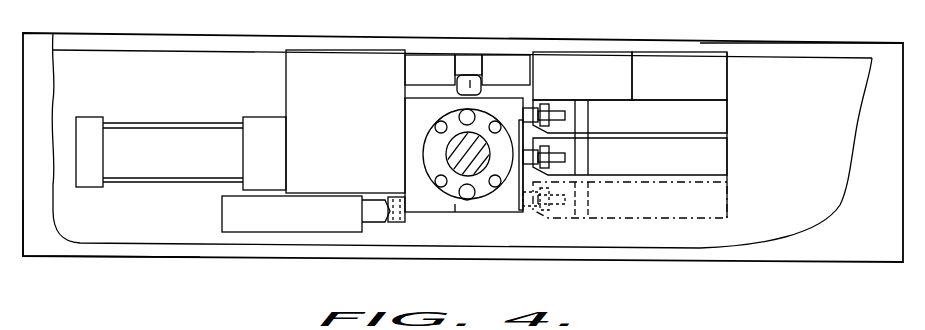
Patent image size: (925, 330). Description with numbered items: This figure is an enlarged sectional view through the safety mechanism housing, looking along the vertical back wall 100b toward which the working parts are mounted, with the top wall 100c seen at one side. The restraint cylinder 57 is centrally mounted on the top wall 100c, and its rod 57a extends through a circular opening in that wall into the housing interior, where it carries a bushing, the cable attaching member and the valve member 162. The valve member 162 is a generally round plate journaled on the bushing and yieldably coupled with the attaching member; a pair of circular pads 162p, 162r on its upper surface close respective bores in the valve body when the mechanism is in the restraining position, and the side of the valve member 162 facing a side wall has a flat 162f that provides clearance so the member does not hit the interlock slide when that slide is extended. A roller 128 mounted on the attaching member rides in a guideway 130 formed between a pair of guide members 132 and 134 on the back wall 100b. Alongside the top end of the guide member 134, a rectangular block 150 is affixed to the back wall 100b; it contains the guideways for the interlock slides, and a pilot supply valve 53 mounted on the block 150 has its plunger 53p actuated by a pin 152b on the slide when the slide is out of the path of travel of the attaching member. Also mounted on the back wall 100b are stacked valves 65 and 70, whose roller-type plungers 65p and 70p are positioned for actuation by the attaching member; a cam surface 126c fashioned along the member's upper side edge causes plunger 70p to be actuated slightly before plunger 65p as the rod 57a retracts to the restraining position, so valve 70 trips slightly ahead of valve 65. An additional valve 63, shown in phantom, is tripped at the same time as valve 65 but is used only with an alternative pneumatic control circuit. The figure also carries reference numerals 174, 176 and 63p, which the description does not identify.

The vertical back wall 100b is at (702, 44).
The top wall 100c is at (60, 244).
The restraint cylinder 57 is at (118, 118).
The rod of restraint cylinder 57a is at (454, 143).
The rectangular block 150 is at (286, 66).
The pilot supply valve 53 is at (225, 210).
The plunger 53p is at (376, 220).
The pin 152b is at (397, 224).
The guide member 134 is at (430, 72).
The guideway 130 is at (466, 58).
The roller 128 is at (470, 80).
The guide member 132 is at (523, 66).
The valve member 162 is at (504, 198).
The flat 162f is at (424, 162).
The circular pad 162r is at (462, 116).
The circular pad 162p is at (468, 200).
The mounting holes 174 is at (438, 148).
The opening 176 is at (455, 212).
The cam surface 126c is at (548, 103).
The valve 70 is at (714, 118).
The roller-type plunger 70p is at (565, 117).
The valve 65 is at (718, 160).
The roller-type plunger 65p is at (565, 157).
The additional valve 63 is at (710, 206).
The lower plate pin 63p is at (568, 230).